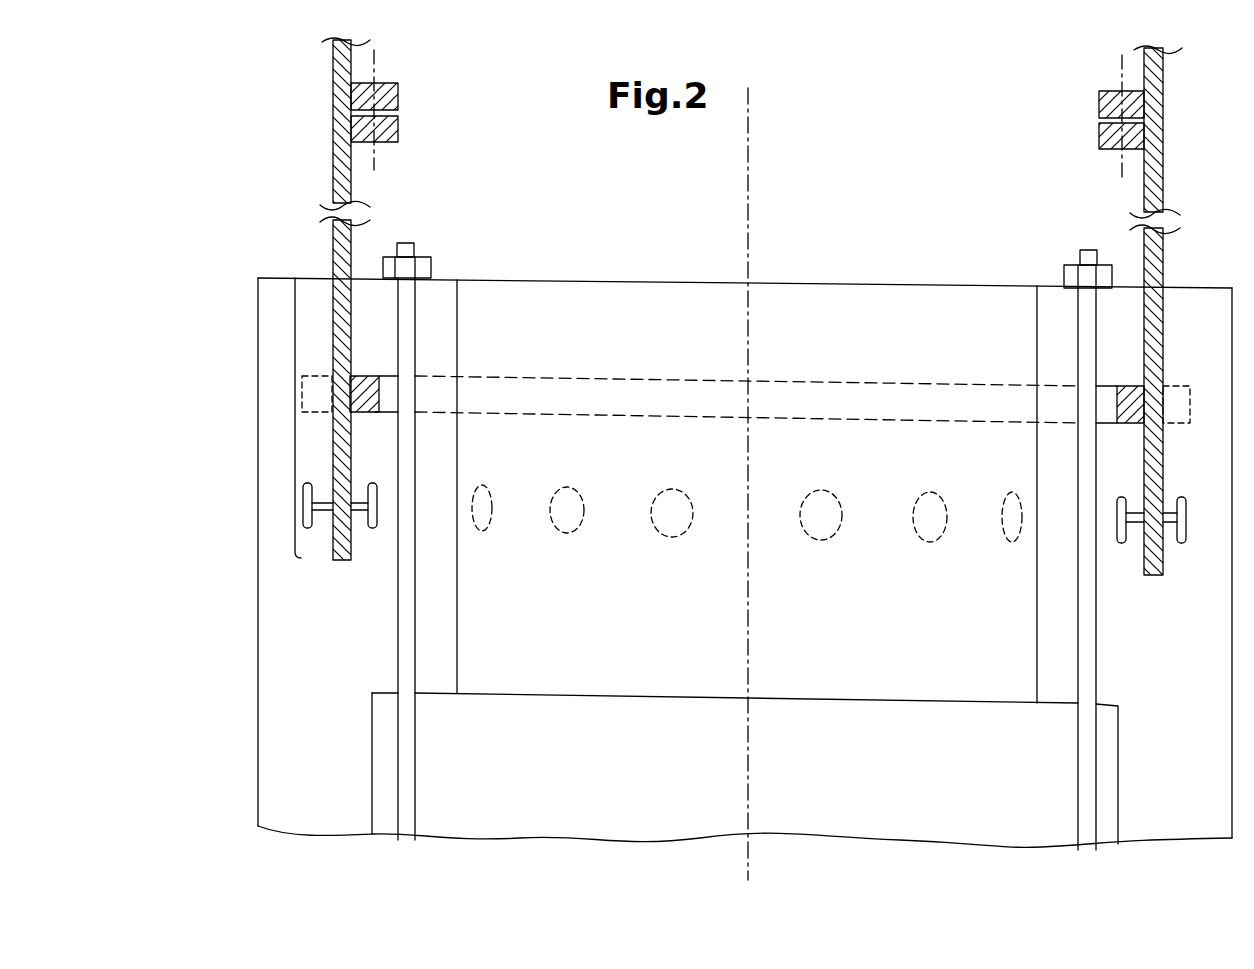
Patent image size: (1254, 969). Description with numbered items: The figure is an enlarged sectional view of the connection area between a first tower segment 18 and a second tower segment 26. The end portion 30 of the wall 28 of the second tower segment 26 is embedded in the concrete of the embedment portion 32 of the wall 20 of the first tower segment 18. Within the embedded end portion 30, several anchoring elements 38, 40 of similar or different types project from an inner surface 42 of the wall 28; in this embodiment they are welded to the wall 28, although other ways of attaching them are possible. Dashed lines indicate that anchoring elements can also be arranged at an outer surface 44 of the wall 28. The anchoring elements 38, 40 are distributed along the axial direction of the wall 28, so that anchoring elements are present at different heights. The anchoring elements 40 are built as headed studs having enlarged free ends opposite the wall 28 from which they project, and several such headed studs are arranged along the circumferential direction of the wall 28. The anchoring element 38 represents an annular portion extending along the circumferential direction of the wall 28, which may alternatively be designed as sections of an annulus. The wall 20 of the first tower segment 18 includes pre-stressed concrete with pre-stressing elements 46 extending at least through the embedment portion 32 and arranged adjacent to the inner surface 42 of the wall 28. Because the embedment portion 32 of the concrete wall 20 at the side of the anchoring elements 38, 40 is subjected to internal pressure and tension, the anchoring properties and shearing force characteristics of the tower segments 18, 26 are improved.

The first tower segment 18 is at (236, 727).
The wall 20 is at (283, 558).
The second tower segment 26 is at (282, 233).
The wall 28 is at (352, 184).
The end portion 30 is at (302, 400).
The embedment portion 32 is at (222, 277).
The anchoring element 38 is at (379, 397).
The anchoring elements 40 is at (372, 503).
The inner surface 42 is at (350, 452).
The outer surface 44 is at (335, 477).
The pre-stressing elements 46 is at (407, 695).